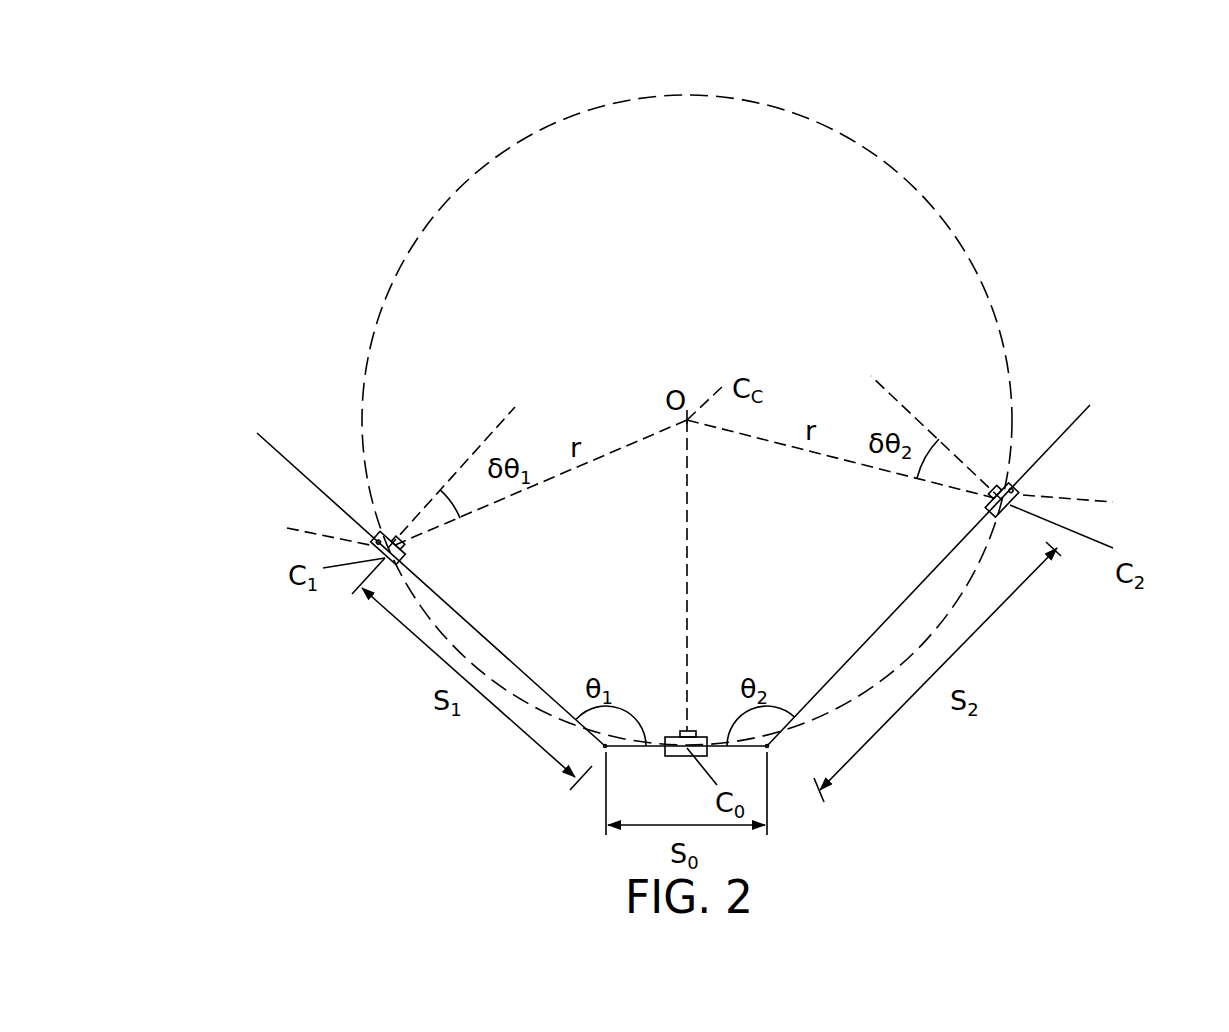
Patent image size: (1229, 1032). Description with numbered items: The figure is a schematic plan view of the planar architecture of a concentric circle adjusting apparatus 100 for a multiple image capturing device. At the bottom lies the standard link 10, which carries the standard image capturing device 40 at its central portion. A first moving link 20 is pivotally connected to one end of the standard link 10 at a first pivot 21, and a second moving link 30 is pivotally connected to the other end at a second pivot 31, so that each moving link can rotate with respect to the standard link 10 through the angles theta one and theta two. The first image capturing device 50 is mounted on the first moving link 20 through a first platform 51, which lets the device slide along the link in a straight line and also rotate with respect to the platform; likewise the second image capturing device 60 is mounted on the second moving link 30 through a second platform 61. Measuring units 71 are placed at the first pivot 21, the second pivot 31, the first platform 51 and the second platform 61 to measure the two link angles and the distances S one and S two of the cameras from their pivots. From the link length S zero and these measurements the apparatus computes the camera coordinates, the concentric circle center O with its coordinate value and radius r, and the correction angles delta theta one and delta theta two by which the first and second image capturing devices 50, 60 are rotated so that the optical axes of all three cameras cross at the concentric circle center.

The concentric circle adjusting apparatus 100 is at (261, 114).
The standard link 10 is at (630, 748).
The first moving link 20 is at (263, 443).
The second moving link 30 is at (1088, 410).
The first pivot 21 is at (604, 752).
The second pivot 31 is at (770, 752).
The standard image capturing device 40 is at (685, 736).
The first image capturing device 50 is at (393, 532).
The first platform 51 is at (373, 538).
The second image capturing device 60 is at (997, 480).
The second platform 61 is at (1013, 482).
The measuring unit 71 is at (705, 520).